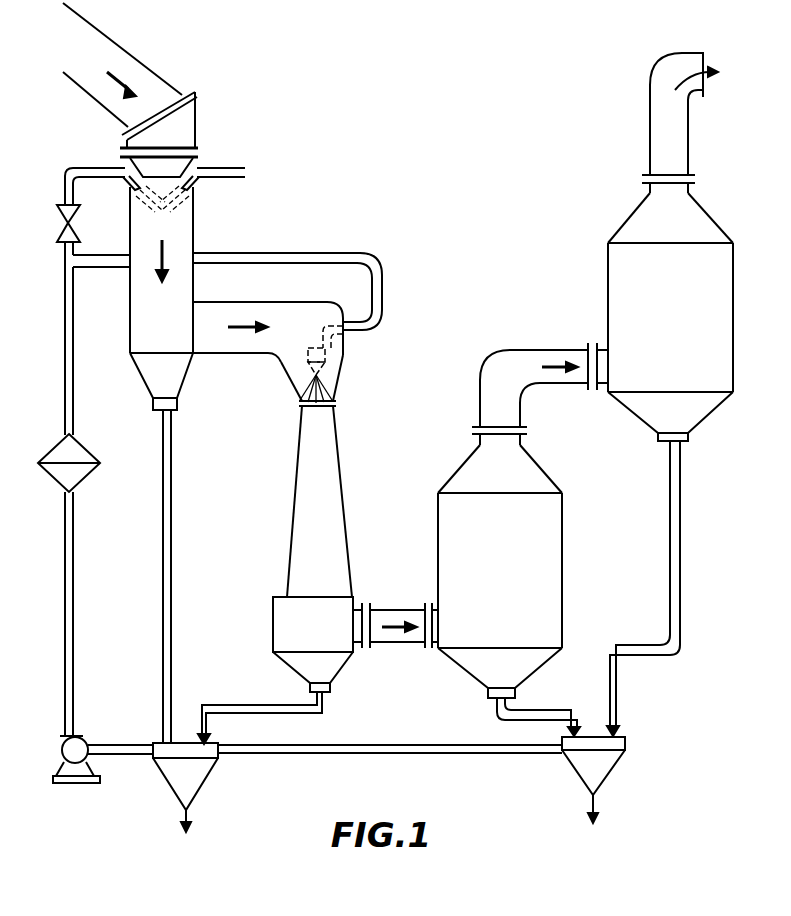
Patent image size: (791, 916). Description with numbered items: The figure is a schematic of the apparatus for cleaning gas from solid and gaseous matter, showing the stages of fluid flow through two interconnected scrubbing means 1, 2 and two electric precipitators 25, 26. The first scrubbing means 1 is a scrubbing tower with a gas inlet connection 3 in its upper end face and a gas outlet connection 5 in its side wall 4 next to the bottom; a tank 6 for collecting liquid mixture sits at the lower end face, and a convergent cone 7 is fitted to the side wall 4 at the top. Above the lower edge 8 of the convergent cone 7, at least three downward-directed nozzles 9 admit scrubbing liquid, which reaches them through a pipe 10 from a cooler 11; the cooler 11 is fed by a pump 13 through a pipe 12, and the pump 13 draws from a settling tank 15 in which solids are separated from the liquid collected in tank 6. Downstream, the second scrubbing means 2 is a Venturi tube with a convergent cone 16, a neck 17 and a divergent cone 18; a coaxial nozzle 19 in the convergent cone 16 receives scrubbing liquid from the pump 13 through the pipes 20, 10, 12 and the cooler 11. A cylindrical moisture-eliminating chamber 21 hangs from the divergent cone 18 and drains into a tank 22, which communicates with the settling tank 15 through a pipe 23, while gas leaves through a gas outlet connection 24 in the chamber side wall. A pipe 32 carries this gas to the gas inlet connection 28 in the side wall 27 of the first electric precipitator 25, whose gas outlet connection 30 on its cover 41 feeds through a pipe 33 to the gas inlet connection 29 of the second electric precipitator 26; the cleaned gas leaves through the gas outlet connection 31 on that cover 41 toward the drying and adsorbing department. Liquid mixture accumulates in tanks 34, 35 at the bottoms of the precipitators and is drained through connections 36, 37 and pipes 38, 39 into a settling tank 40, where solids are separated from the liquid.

The first scrubbing means 1 is at (200, 232).
The second scrubbing means 2 is at (335, 501).
The gas inlet connection 3 is at (188, 118).
The side wall 4 is at (130, 245).
The gas outlet connection 5 is at (230, 307).
The tank 6 is at (175, 382).
The convergent cone 7 is at (200, 158).
The lower edge 8 is at (143, 170).
The nozzles 9 is at (123, 180).
The pipe 10 is at (65, 320).
The cooler 11 is at (82, 455).
The pipe 12 is at (78, 606).
The pump 13 is at (80, 736).
The settling tank 15 is at (192, 758).
The convergent cone 16 is at (328, 387).
The neck 17 is at (333, 404).
The divergent cone 18 is at (327, 520).
The nozzle 19 is at (312, 360).
The pipe 20 is at (384, 297).
The moisture-eliminating chamber 21 is at (340, 610).
The tank 22 is at (335, 666).
The pipe 23 is at (220, 692).
The gas outlet connection 24 is at (358, 635).
The electric precipitator 25 is at (565, 464).
The electric precipitator 26 is at (650, 359).
The side wall 27 is at (438, 581).
The gas inlet connection 28 is at (435, 648).
The gas inlet connection 29 is at (603, 382).
The gas outlet connection 30 is at (513, 440).
The gas outlet connection 31 is at (692, 192).
The pipe 32 is at (412, 648).
The pipe 33 is at (508, 350).
The tank 34 is at (552, 655).
The tank 35 is at (653, 417).
The connection 36 is at (492, 699).
The connection 37 is at (683, 443).
The pipe 38 is at (538, 715).
The pipe 39 is at (617, 698).
The settling tank 40 is at (608, 767).
The cover 41 is at (466, 473).